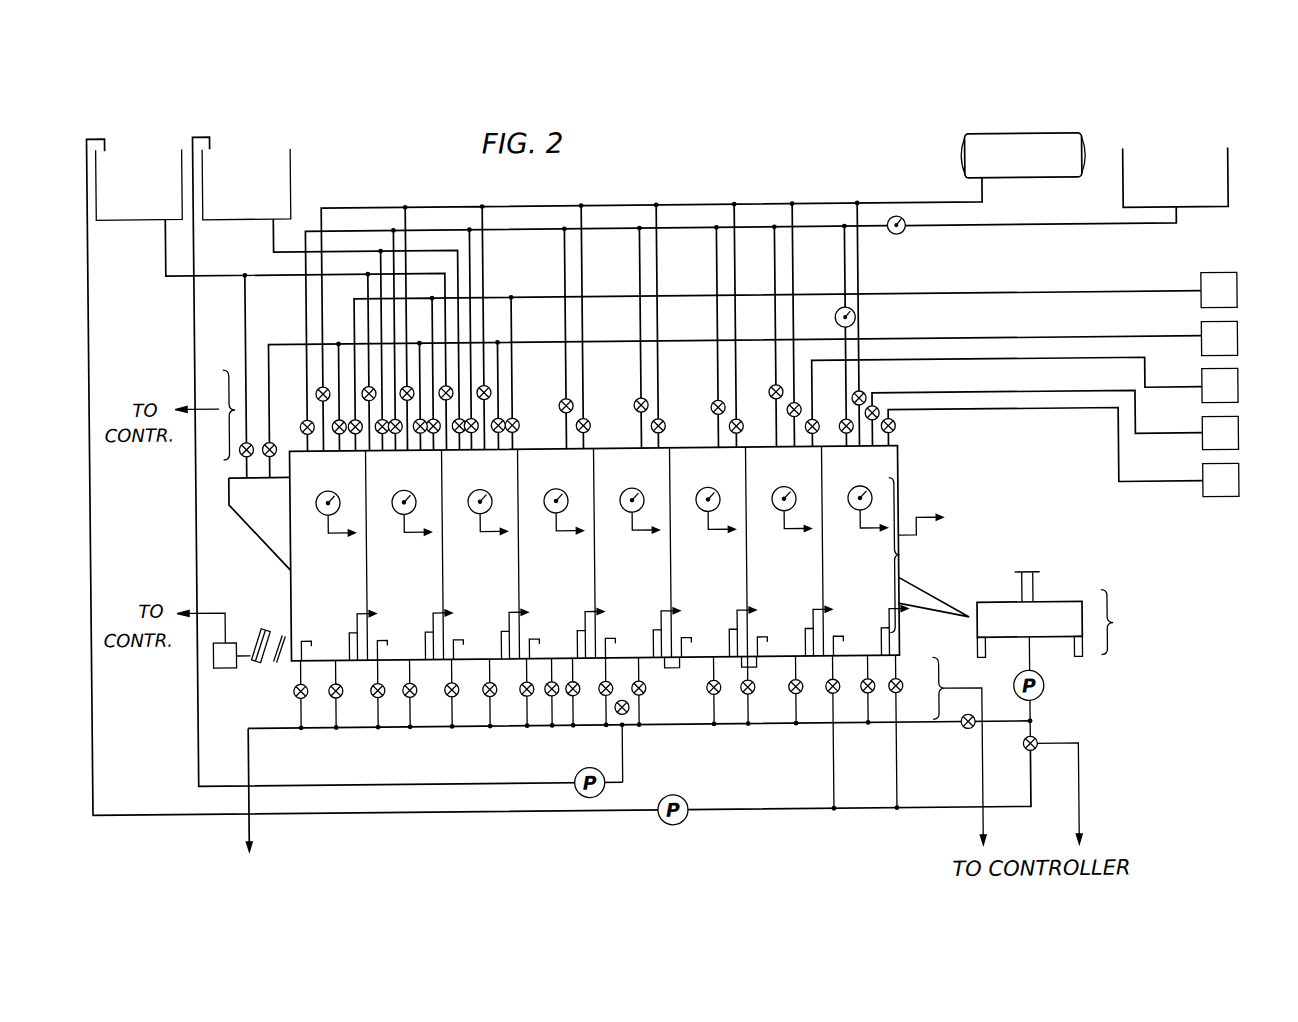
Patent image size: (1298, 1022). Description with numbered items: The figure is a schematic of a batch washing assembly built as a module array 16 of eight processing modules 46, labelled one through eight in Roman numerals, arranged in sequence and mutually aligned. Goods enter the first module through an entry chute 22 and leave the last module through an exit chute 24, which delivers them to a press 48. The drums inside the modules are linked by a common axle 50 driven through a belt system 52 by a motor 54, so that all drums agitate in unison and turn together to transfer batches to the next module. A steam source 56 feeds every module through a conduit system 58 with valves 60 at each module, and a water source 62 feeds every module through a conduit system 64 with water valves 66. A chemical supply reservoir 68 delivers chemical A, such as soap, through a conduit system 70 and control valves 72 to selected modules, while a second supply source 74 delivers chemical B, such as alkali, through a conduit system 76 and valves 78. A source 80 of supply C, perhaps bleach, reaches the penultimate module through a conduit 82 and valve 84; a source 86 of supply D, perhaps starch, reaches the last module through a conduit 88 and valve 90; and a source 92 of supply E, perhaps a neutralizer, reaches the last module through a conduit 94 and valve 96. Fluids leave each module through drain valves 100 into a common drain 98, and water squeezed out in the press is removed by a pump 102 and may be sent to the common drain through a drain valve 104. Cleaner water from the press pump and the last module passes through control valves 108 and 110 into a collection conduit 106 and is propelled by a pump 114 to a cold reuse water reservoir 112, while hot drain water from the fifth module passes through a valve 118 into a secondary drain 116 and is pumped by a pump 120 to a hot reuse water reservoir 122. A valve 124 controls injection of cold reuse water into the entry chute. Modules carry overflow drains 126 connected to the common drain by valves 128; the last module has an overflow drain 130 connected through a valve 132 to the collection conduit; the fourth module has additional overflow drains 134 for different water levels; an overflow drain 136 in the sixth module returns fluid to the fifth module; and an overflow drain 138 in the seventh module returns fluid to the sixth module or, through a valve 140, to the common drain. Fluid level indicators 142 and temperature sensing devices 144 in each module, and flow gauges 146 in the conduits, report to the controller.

The module array 16 is at (296, 581).
The entry chute 22 is at (252, 523).
The exit chute 24 is at (922, 600).
The processing modules 46 is at (694, 448).
The press 48 is at (1053, 605).
The common axle 50 is at (277, 660).
The belt system 52 is at (258, 624).
The motor 54 is at (223, 665).
The steam source 56 is at (1041, 181).
The conduit system 58 is at (748, 205).
The valves 60 is at (592, 427).
The water source 62 is at (1233, 166).
The conduit system 64 is at (752, 229).
The water valves 66 is at (635, 401).
The chemical supply reservoir 68 is at (1240, 298).
The conduit system 70 is at (690, 296).
The control valves 72 is at (516, 418).
The second supply source 74 is at (1240, 347).
The conduit system 76 is at (684, 342).
The valves 78 is at (274, 439).
The source of supply C 80 is at (1240, 395).
The conduit 82 is at (1018, 363).
The valve 84 is at (817, 421).
The source of supply D 86 is at (1240, 440).
The conduit 88 is at (1076, 395).
The valve 90 is at (881, 396).
The source of supply E 92 is at (1240, 488).
The conduit 94 is at (1046, 413).
The valve 96 is at (896, 428).
The common drain 98 is at (243, 824).
The drain valves 100 is at (338, 696).
The pump 102 is at (1044, 690).
The drain valve 104 is at (963, 732).
The collection conduit 106 is at (606, 812).
The control valve 108 is at (1036, 742).
The control valve 110 is at (891, 698).
The cold reuse water reservoir 112 is at (125, 216).
The pump 114 is at (684, 821).
The secondary drain 116 is at (194, 558).
The valve 118 is at (627, 715).
The pump 120 is at (573, 777).
The hot reuse water reservoir 122 is at (295, 163).
The valve 124 is at (242, 452).
The overflow drains 126 is at (302, 646).
The valves 128 is at (292, 695).
The overflow drain 130 is at (834, 636).
The valve 132 is at (828, 698).
The additional overflow drains 134 is at (531, 634).
The overflow drain 136 is at (684, 636).
The overflow drain 138 is at (758, 636).
The valve 140 is at (752, 696).
The fluid level indicators 142 is at (352, 611).
The temperature sensing devices 144 is at (318, 491).
The flow gauges 146 is at (904, 236).